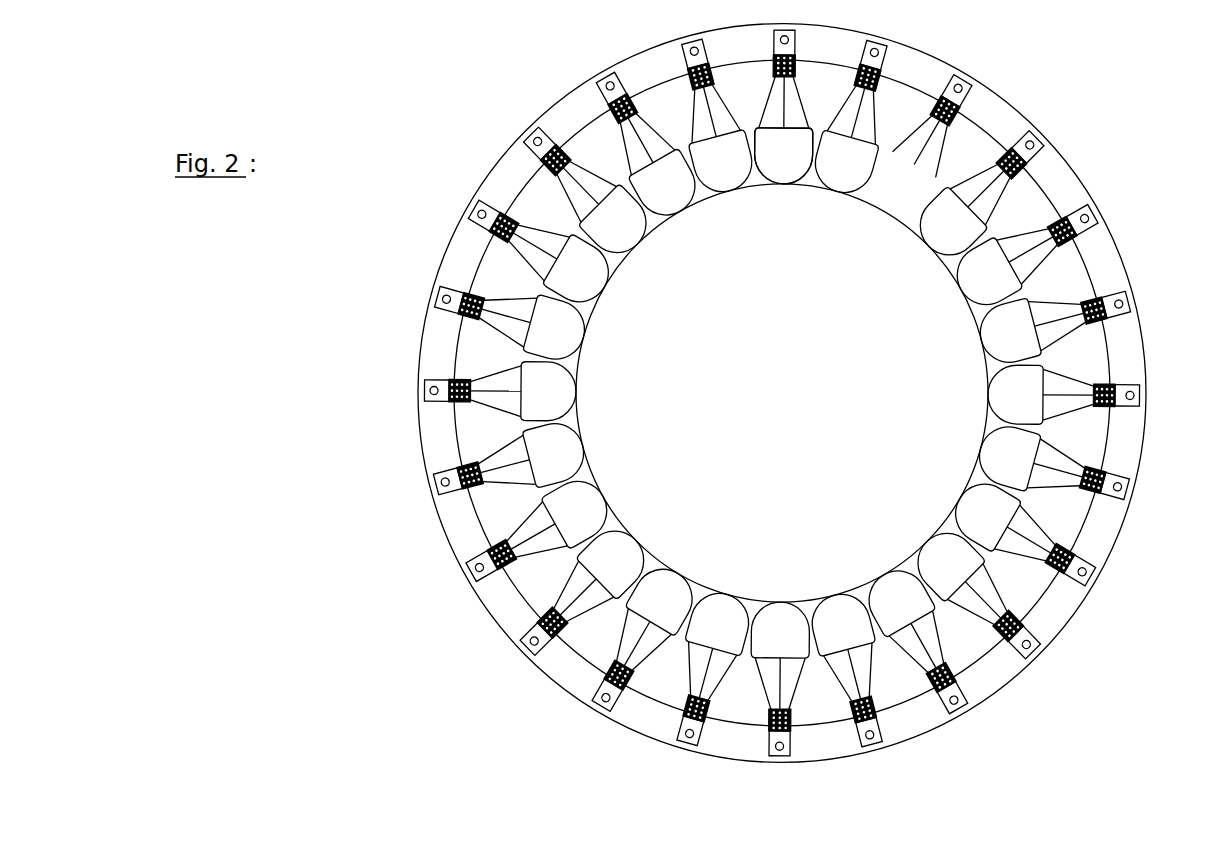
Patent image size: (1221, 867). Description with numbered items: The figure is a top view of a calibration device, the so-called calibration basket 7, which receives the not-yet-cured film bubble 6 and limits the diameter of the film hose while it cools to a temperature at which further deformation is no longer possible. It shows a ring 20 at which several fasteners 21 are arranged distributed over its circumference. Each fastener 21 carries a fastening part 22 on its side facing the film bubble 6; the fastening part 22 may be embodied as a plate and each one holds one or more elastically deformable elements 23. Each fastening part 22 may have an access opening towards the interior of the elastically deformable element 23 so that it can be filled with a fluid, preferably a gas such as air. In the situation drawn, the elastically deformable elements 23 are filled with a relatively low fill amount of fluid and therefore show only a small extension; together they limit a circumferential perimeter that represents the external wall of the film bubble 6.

The calibration basket 7 is at (1112, 146).
The ring 20 is at (1105, 272).
The film bubble 6 is at (755, 186).
The fastener 21 is at (948, 138).
The fastening part 22 is at (858, 138).
The elastically deformable element 23 is at (851, 190).